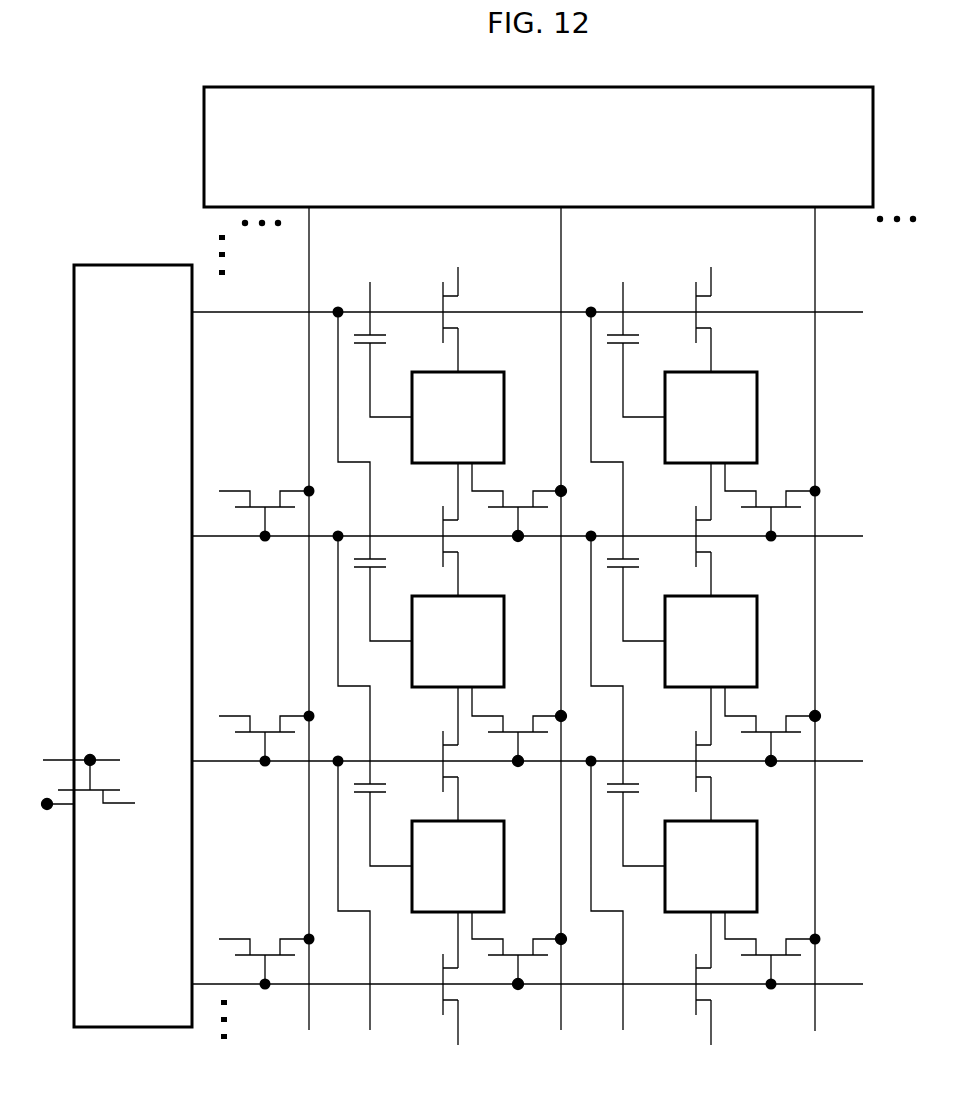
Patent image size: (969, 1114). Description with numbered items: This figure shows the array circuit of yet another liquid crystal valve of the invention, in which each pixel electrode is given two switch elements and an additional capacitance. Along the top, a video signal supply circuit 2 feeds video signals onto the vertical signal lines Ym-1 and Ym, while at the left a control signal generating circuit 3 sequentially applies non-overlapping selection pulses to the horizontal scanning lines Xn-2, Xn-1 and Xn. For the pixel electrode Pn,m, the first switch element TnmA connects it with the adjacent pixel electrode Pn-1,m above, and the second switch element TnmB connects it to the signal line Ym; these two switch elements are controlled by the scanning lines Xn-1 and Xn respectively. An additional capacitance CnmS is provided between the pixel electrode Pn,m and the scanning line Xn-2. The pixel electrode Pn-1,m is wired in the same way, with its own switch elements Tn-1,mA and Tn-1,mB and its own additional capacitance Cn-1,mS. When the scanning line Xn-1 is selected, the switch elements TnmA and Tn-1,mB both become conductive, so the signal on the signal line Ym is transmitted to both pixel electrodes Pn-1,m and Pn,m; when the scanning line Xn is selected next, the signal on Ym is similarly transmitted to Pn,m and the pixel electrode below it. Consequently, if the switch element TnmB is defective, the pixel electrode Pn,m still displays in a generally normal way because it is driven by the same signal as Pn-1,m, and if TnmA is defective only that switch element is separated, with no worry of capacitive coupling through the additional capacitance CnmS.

The video signal supply circuit 2 is at (699, 86).
The control signal generating circuit 3 is at (150, 264).
The scanning line Xn-2 is at (528, 297).
The scanning line Xn-1 is at (528, 520).
The scanning line Xn is at (528, 745).
The signal line Ym-1 is at (332, 618).
The signal line Ym is at (577, 618).
The pixel electrode Pn-1,m is at (458, 417).
The pixel electrode Pn,m is at (458, 641).
The switch element Tn-1,mA is at (490, 319).
The switch element TnmA is at (479, 529).
The switch element Tn-1,mB is at (519, 502).
The switch element TnmB is at (519, 727).
The additional capacitance Cn-1,mS is at (393, 344).
The additional capacitance CnmS is at (394, 560).